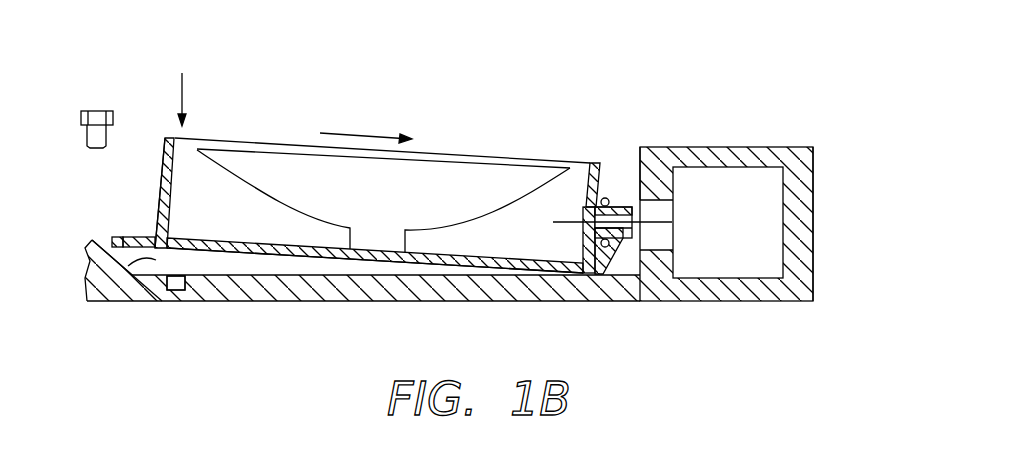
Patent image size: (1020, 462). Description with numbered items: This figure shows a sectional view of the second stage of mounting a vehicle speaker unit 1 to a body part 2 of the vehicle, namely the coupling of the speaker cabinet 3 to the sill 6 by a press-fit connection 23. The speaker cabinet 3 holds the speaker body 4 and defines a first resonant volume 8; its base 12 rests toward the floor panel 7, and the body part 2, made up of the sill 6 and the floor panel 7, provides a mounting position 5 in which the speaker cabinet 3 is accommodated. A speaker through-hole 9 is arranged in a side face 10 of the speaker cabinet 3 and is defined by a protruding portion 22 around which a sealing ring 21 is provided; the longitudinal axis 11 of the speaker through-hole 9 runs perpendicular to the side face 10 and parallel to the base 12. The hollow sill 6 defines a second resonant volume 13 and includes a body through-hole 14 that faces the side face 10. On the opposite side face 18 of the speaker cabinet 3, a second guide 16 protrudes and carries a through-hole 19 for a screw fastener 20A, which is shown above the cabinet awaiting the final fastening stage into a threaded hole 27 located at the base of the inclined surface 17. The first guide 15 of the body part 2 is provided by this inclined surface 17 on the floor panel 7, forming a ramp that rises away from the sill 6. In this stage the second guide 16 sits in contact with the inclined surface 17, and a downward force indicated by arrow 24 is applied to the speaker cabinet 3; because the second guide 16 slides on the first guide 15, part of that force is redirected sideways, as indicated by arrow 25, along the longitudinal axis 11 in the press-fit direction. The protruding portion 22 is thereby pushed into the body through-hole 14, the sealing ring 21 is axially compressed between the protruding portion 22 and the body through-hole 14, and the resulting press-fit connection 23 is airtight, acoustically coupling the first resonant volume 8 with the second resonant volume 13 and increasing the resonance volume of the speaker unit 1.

The speaker unit 1 is at (202, 138).
The body part 2 is at (790, 149).
The speaker cabinet 3 is at (171, 138).
The speaker body 4 is at (418, 160).
The mounting position 5 is at (205, 260).
The sill 6 is at (813, 178).
The floor panel 7 is at (257, 274).
The first resonant volume 8 is at (528, 236).
The speaker through-hole 9 is at (632, 230).
The side face 10 is at (597, 162).
The longitudinal axis 11 is at (576, 222).
The base 12 is at (297, 258).
The second resonant volume 13 is at (703, 186).
The body through-hole 14 is at (673, 222).
The first guide 15 is at (114, 271).
The second guide 16 is at (120, 235).
The inclined surface 17 is at (121, 299).
The side face 18 is at (162, 182).
The through-hole 19 is at (138, 236).
The screw fastener 20A is at (97, 110).
The sealing ring 21 is at (604, 199).
The protruding portion 22 is at (620, 246).
The press-fit connection 23 is at (622, 157).
The arrow 24 is at (183, 87).
The arrow 25 is at (333, 130).
The threaded hole 27 is at (173, 290).